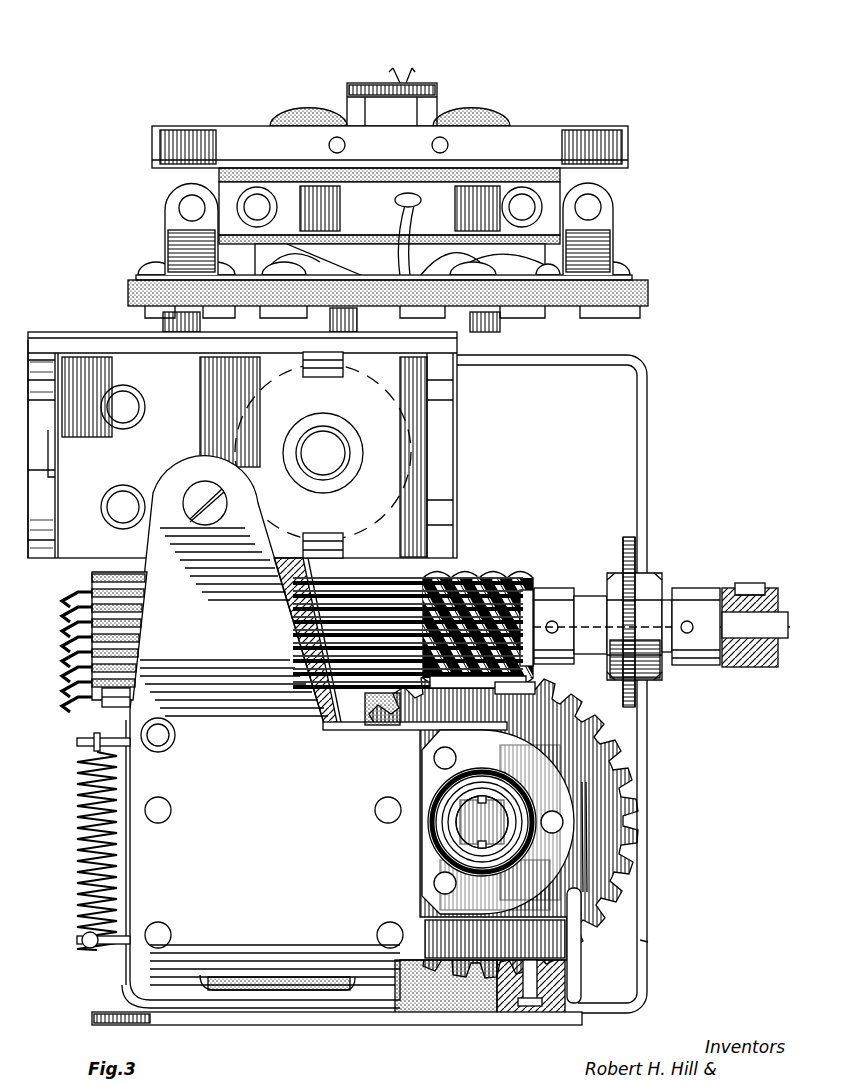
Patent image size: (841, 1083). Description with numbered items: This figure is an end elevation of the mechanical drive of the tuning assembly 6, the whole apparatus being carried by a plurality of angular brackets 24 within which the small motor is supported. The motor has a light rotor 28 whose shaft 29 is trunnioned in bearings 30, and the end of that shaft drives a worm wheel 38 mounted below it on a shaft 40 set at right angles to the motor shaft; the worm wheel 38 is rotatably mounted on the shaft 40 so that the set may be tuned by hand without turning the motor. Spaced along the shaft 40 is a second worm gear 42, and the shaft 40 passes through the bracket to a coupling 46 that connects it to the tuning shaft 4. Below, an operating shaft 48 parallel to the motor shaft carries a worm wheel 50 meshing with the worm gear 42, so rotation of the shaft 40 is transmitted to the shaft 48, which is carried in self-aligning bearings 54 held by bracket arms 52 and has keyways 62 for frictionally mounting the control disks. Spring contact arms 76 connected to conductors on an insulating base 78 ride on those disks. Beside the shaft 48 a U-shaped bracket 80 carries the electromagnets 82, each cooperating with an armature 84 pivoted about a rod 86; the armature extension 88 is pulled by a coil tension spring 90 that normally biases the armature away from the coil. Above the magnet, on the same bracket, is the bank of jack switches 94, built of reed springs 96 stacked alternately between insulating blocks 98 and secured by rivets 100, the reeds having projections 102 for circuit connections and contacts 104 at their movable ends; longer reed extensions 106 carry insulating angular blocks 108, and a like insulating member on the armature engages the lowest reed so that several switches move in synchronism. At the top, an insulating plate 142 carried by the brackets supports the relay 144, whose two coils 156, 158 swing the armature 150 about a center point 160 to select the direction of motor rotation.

The tuning shaft 4 is at (760, 614).
The tuning assembly 6 is at (655, 938).
The angular brackets 24 is at (640, 447).
The rotor 28 is at (416, 449).
The motor shaft 29 is at (331, 448).
The bearings 30 is at (336, 375).
The worm wheel 38 is at (326, 556).
The shaft 40 is at (667, 605).
The second worm gear 42 is at (471, 576).
The coupling 46 is at (684, 590).
The operating shaft 48 is at (492, 824).
The worm wheel 50 is at (632, 860).
The bracket arms 52 is at (522, 756).
The self-aligning bearings 54 is at (452, 805).
The keyways 62 is at (490, 801).
The spring contact arms 76 is at (588, 800).
The insulating base 78 is at (506, 1004).
The U-shaped bracket 80 is at (356, 1012).
The electromagnets 82 is at (322, 977).
The armature 84 is at (333, 730).
The rod 86 is at (176, 735).
The armature extension 88 is at (77, 742).
The coil tension spring 90 is at (80, 792).
The jack switches 94 is at (340, 586).
The reed springs 96 is at (312, 655).
The insulating blocks 98 is at (96, 696).
The rivets 100 is at (116, 706).
The projections 102 is at (62, 661).
The contacts 104 is at (427, 690).
The reed extensions 106 is at (462, 680).
The insulating angular block 108 is at (536, 586).
The insulating plate 142 is at (650, 292).
The relay 144 is at (273, 124).
The armature 150 is at (566, 186).
The coil 156 is at (490, 113).
The coil 158 is at (319, 120).
The center point 160 is at (412, 73).